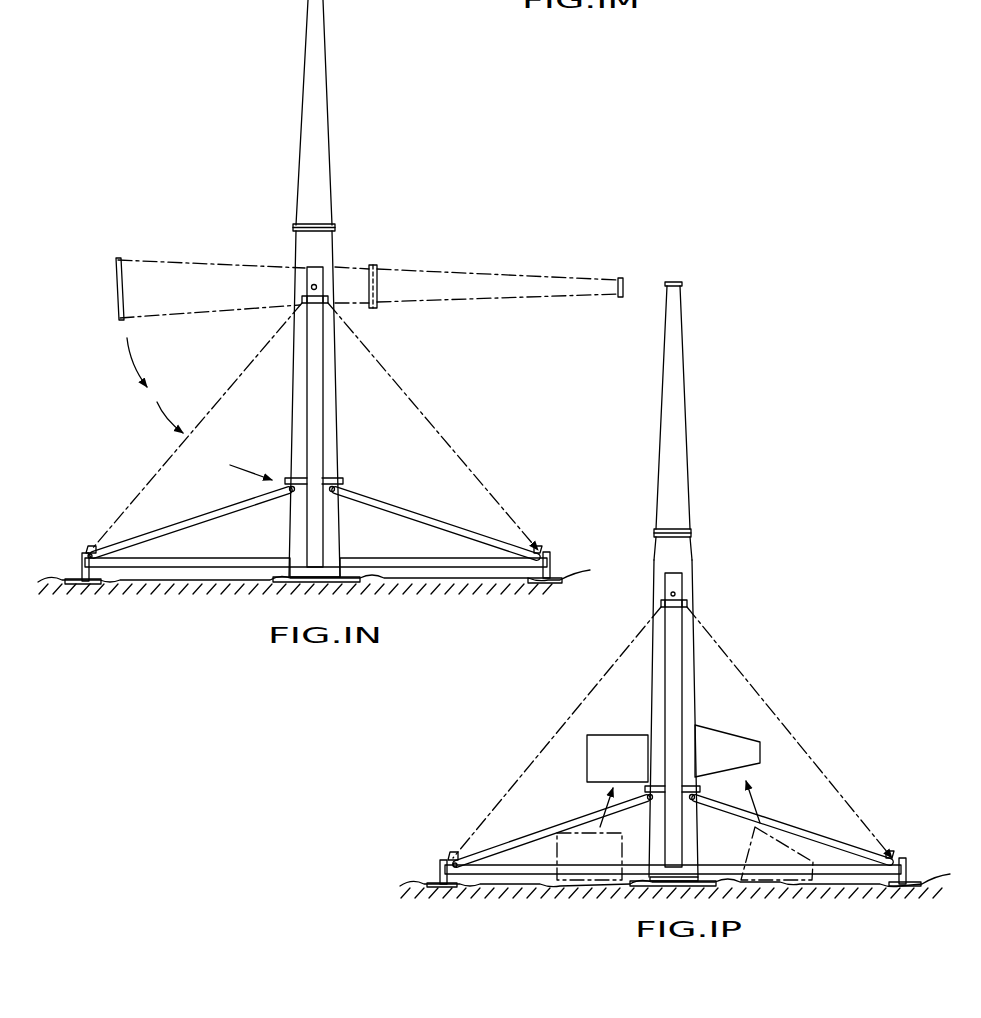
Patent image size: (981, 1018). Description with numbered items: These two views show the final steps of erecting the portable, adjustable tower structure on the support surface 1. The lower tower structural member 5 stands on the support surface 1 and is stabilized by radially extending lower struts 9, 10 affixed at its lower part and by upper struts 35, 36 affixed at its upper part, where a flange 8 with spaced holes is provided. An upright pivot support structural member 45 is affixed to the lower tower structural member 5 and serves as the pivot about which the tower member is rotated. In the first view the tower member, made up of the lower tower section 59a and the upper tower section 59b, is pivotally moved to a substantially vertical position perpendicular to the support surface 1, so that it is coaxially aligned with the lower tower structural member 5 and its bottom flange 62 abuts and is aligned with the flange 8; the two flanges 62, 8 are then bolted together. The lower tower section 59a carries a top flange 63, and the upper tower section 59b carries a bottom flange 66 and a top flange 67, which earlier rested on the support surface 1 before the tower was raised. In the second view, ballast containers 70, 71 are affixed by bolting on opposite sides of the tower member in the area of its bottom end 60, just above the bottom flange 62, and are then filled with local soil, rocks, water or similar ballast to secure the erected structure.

In FIG. 1N, the support surface 1 is at (567, 576).
In FIG. 1N, the lower tower structural member 5 is at (292, 522).
In FIG. 1N, the flange 8 is at (343, 481).
In FIG. 1N, the lower strut 9 is at (182, 575).
In FIG. 1N, the lower strut 10 is at (437, 570).
In FIG. 1N, the upper strut 35 is at (185, 526).
In FIG. 1N, the upper strut 36 is at (410, 512).
In FIG. 1N, the pivot support structural member 45 is at (306, 400).
In FIG. 1P, the pivot support structural member 45 is at (665, 690).
In FIG. 1N, the lower tower section 59a is at (240, 278).
In FIG. 1P, the lower tower section 59a is at (697, 706).
In FIG. 1N, the upper tower section 59b is at (326, 128).
In FIG. 1P, the upper tower section 59b is at (686, 396).
In FIG. 1P, the bottom end 60 is at (655, 778).
In FIG. 1N, the bottom flange 62 is at (117, 302).
In FIG. 1P, the bottom flange 62 is at (713, 778).
In FIG. 1P, the top flange 63 is at (692, 538).
In FIG. 1P, the bottom flange 66 is at (690, 531).
In FIG. 1P, the top flange 67 is at (679, 283).
In FIG. 1P, the ballast container 70 is at (622, 735).
In FIG. 1P, the ballast container 71 is at (712, 728).